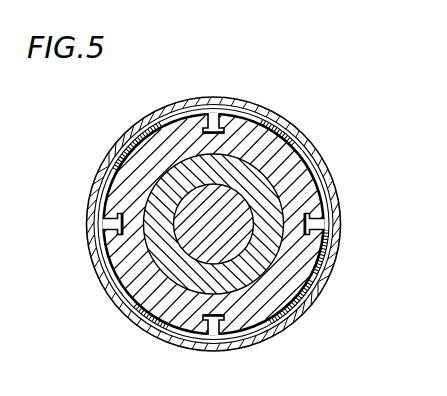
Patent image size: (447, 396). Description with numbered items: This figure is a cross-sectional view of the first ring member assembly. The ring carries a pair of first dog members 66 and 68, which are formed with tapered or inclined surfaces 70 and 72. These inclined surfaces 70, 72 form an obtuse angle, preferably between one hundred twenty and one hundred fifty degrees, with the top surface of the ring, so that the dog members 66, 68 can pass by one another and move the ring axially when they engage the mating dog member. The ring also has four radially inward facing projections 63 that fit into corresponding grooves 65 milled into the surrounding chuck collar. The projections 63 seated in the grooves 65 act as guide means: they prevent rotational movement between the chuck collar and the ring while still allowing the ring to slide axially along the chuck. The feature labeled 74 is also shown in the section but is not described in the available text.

The inclined surface 72 is at (173, 103).
The first dog member 68 is at (303, 311).
The first dog member 66 is at (131, 140).
The inclined surface 70 is at (120, 168).
The groove 65 is at (245, 132).
The radially inward facing projection 63 is at (215, 125).
The lower T-shaped slot 74 is at (216, 336).